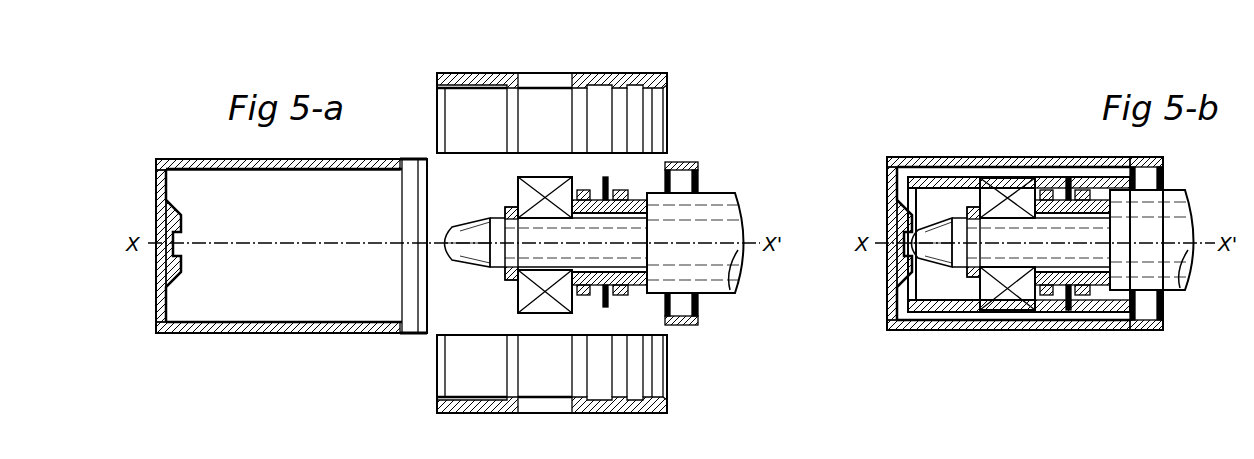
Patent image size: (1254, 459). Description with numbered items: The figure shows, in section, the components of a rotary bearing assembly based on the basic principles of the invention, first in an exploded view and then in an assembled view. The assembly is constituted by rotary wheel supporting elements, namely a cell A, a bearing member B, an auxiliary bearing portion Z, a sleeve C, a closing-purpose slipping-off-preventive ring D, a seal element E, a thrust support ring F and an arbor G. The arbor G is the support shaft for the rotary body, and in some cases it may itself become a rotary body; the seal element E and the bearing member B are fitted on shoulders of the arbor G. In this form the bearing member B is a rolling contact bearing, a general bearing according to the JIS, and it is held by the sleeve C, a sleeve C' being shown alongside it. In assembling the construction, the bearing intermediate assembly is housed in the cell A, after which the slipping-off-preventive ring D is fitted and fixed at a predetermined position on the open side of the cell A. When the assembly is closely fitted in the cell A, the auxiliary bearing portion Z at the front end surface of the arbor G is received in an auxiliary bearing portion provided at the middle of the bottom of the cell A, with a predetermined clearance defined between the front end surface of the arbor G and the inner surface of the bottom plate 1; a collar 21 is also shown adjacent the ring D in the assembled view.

In FIG. 5A, the cell A is at (313, 337).
In FIG. 5B, the cell A is at (1059, 162).
In FIG. 5A, the bearing member B is at (536, 315).
In FIG. 5B, the bearing member B is at (988, 186).
In FIG. 5A, the sleeve C is at (599, 319).
In FIG. 5B, the sleeve C is at (1044, 281).
In FIG. 5A, the sleeve C' is at (575, 243).
In FIG. 5B, the sleeve C' is at (1019, 216).
In FIG. 5A, the closing-purpose slipping-off-preventive ring D is at (688, 326).
In FIG. 5B, the closing-purpose slipping-off-preventive ring D is at (1165, 178).
In FIG. 5A, the seal element E is at (612, 300).
In FIG. 5B, the seal element E is at (1085, 298).
In FIG. 5A, the thrust support ring F is at (506, 282).
In FIG. 5B, the thrust support ring F is at (968, 280).
In FIG. 5A, the arbor G is at (741, 184).
In FIG. 5B, the arbor G is at (1127, 305).
In FIG. 5A, the auxiliary bearing portion Z is at (173, 246).
In FIG. 5B, the auxiliary bearing portion Z is at (904, 245).
In FIG. 5B, the bottom plate 1 is at (890, 235).
In FIG. 5B, the collar 21 is at (1160, 307).